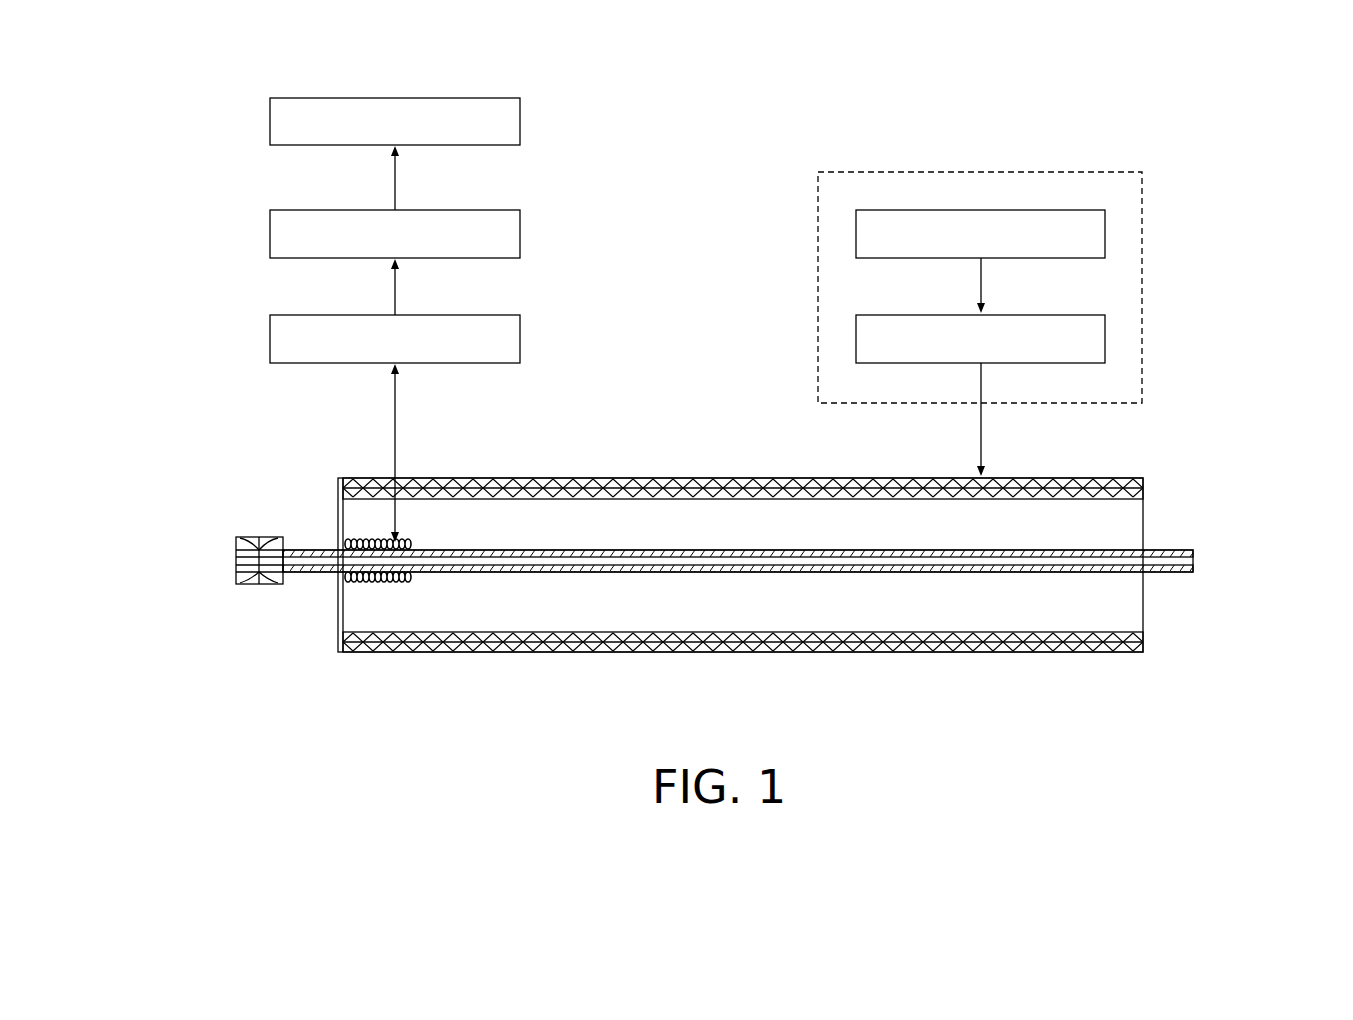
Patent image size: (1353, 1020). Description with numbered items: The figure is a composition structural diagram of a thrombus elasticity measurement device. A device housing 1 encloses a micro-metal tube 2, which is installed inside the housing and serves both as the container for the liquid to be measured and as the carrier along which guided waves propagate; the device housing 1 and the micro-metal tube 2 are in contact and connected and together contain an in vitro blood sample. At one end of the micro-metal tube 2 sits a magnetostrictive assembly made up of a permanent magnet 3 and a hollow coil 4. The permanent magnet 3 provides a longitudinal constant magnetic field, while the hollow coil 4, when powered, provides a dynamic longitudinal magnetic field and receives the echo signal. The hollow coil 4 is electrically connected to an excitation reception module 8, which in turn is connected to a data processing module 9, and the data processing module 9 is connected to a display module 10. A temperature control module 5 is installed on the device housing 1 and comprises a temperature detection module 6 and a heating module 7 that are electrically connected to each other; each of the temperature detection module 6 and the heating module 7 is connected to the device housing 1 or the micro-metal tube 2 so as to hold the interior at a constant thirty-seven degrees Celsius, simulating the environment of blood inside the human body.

The device housing 1 is at (1098, 478).
The micro-metal tube 2 is at (1168, 570).
The permanent magnet 3 is at (236, 548).
The hollow coil 4 is at (372, 583).
The temperature control module 5 is at (1105, 125).
The temperature detection module 6 is at (1105, 235).
The heating module 7 is at (1105, 340).
The excitation reception module 8 is at (270, 337).
The data processing module 9 is at (270, 233).
The display module 10 is at (270, 124).